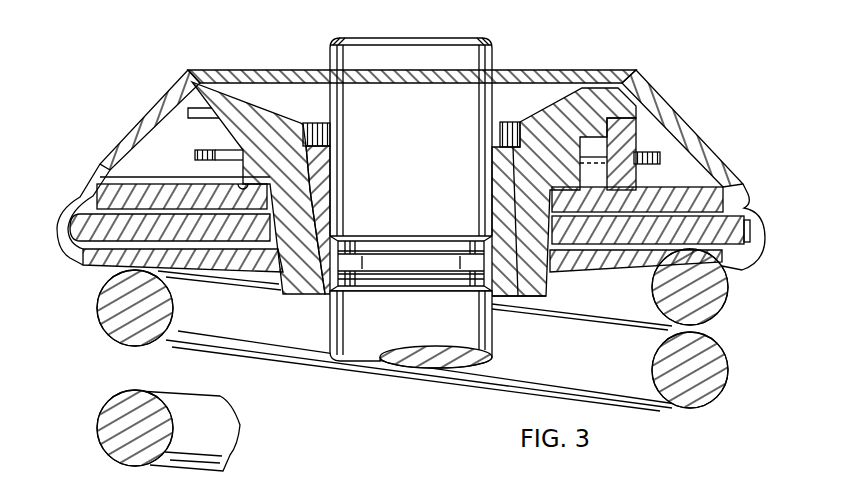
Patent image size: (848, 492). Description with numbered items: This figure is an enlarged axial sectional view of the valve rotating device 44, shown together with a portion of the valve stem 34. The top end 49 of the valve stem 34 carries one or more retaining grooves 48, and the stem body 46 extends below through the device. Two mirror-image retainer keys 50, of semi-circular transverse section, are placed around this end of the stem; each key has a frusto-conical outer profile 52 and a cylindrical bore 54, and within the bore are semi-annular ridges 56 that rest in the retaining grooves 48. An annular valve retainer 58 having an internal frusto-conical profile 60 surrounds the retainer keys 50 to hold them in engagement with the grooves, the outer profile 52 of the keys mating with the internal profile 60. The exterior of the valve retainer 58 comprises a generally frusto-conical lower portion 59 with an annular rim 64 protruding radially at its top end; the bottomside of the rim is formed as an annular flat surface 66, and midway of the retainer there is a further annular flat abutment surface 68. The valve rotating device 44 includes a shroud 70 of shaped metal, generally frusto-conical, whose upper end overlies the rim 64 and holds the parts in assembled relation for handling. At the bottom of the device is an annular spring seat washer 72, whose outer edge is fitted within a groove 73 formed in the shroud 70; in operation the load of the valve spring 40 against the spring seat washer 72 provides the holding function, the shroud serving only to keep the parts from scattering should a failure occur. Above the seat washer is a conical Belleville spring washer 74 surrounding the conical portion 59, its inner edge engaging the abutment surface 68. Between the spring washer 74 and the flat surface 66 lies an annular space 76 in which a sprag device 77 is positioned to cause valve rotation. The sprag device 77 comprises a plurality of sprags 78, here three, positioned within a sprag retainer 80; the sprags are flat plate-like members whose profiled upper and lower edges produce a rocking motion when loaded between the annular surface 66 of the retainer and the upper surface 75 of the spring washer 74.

The valve stem 34 is at (390, 345).
The valve spring 40 is at (107, 328).
The valve rotating device 44 is at (421, 189).
The plunger / stem 46 is at (386, 118).
The retaining grooves 48 is at (426, 279).
The end of the valve stem 49 is at (340, 57).
The retainer keys 50 is at (320, 150).
The frusto-conical outer profile 52 is at (312, 268).
The cylindrical bore 54 is at (331, 191).
The semi-annular ridges 56 is at (353, 274).
The valve retainer 58 is at (552, 292).
The frusto-conical lower portion 59 is at (276, 278).
The internal frusto-conical profile 60 is at (491, 194).
The annular rim 64 is at (644, 110).
The annular flat surface 66 is at (205, 118).
The abutment surface 68 is at (241, 185).
The shroud 70 is at (113, 147).
The spring seat washer 72 is at (80, 226).
The groove 73 is at (750, 232).
The Belleville spring washer 74 is at (97, 196).
The upper surface 75 is at (90, 163).
The annular space 76 is at (692, 176).
The sprag device 77 is at (670, 155).
The sprags 78 is at (622, 143).
The sprag retainer 80 is at (200, 148).